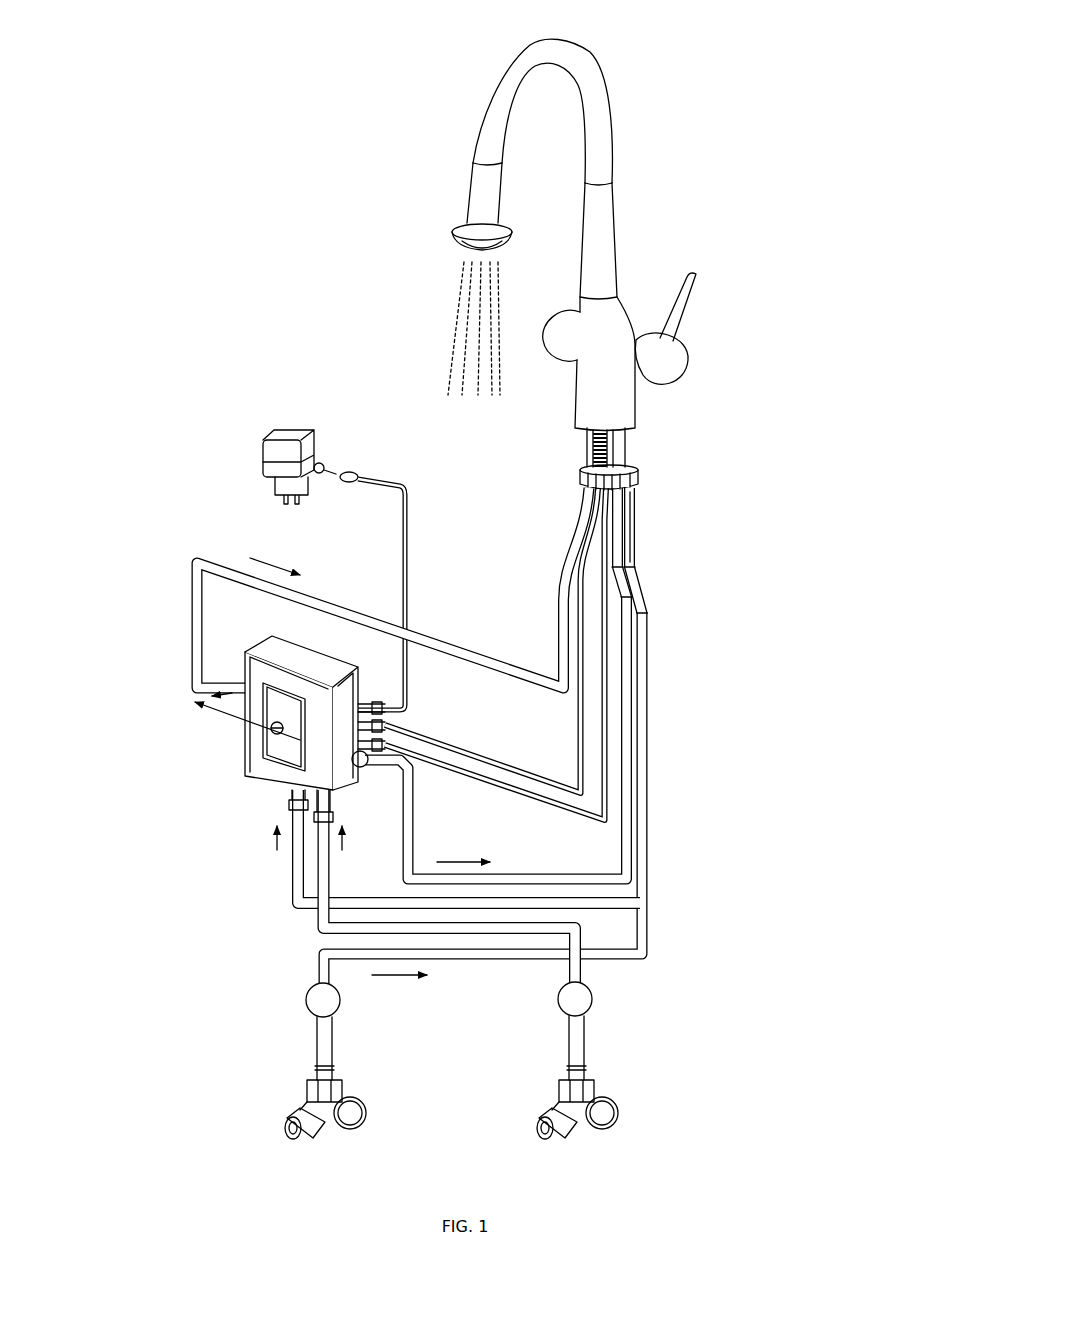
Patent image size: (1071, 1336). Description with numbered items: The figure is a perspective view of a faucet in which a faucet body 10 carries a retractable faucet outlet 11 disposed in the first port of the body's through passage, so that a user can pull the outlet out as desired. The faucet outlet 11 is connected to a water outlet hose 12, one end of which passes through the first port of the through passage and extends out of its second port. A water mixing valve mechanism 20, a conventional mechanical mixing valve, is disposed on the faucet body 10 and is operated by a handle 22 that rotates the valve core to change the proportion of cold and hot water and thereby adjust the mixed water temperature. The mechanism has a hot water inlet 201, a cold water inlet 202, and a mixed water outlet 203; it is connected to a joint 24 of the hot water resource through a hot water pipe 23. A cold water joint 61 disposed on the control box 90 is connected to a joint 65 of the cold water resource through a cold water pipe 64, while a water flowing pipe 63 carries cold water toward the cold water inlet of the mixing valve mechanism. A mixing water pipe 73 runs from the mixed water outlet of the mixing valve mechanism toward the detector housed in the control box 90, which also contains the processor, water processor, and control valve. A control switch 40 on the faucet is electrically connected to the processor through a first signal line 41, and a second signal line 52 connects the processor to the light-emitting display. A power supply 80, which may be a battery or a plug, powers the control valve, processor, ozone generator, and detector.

The faucet body 10 is at (625, 212).
The faucet outlet 11 is at (452, 230).
The water outlet hose 12 is at (212, 560).
The water mixing valve mechanism 20 is at (693, 355).
The handle 22 is at (694, 280).
The hot water pipe 23 is at (323, 1033).
The joint of the hot water resource 24 is at (360, 1130).
The control switch 40 is at (545, 313).
The first signal line 41 is at (475, 748).
The second signal line 52 is at (510, 788).
The cold water joint 61 is at (335, 798).
The water flowing pipe 63 is at (588, 870).
The cold water pipe 64 is at (583, 1033).
The joint of the cold water resource 65 is at (617, 1122).
The mixing water pipe 73 is at (290, 905).
The power supply 80 is at (280, 448).
The control box 90 is at (273, 752).
The hot water inlet 201 is at (635, 525).
The cold water inlet 202 is at (617, 512).
The mixed water outlet 203 is at (628, 543).